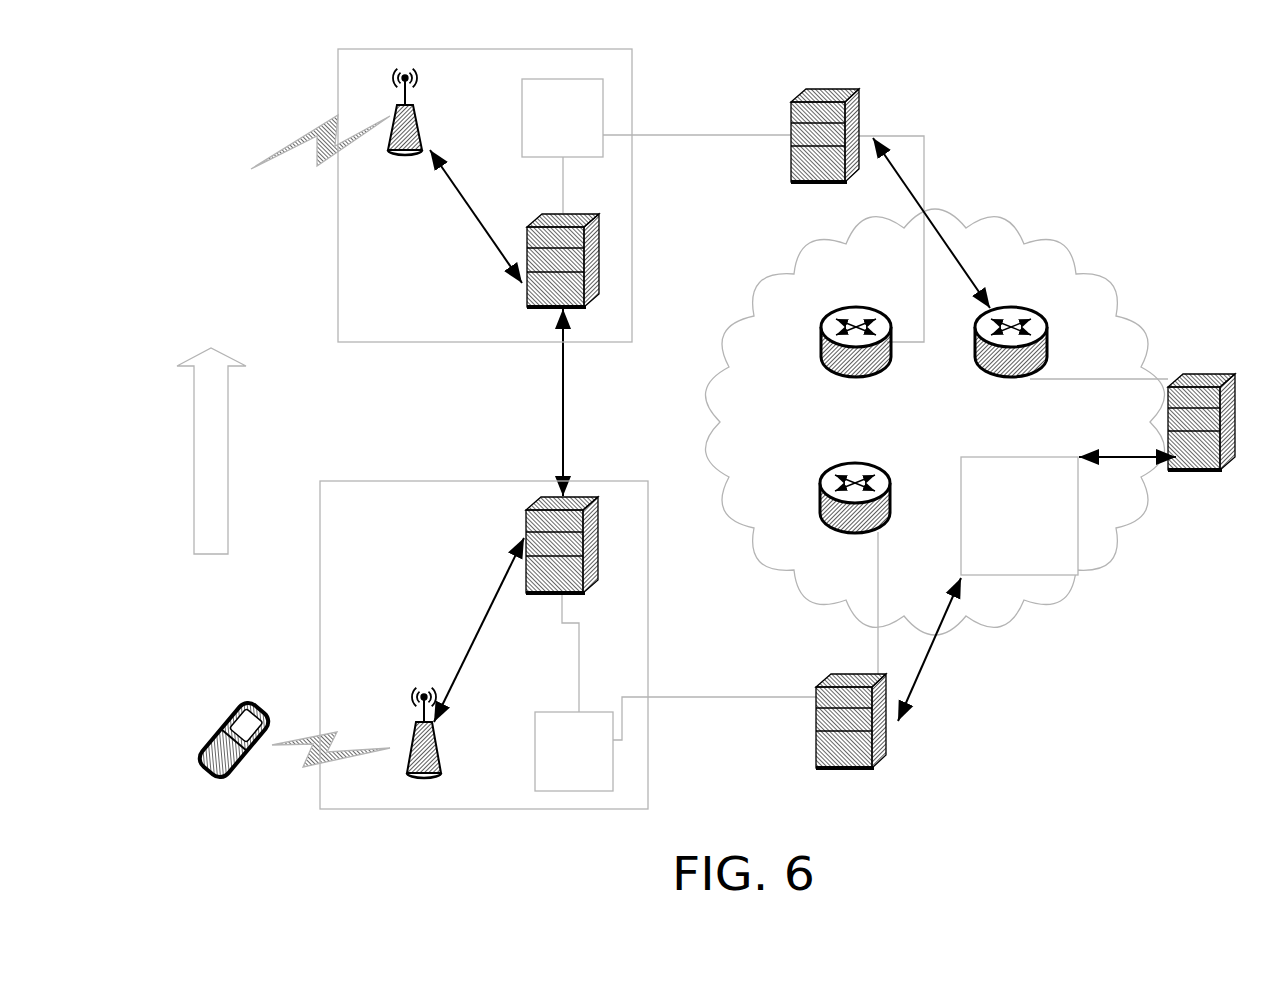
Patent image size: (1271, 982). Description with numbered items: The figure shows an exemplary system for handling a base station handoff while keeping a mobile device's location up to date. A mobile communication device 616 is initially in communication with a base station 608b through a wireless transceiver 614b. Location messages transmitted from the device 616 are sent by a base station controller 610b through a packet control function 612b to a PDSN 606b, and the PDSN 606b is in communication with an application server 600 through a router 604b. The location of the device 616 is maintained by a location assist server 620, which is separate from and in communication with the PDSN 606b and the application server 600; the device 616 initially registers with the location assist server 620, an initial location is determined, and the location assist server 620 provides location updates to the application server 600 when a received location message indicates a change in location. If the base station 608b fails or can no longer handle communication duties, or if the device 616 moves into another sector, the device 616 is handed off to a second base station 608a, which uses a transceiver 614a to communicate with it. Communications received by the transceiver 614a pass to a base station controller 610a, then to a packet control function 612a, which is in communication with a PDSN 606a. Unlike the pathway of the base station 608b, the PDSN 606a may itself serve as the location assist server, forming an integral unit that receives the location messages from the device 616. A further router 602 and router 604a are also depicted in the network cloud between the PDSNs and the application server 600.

The application server 600 is at (1201, 437).
The router 602 is at (1011, 358).
The router 604a is at (856, 358).
The router 604b is at (855, 513).
The PDSN 606a is at (825, 150).
The PDSN 606b is at (851, 736).
The base station 608a is at (632, 308).
The base station 608b is at (596, 481).
The base station controller 610a is at (600, 233).
The base station controller 610b is at (597, 515).
The packet control function 612a is at (562, 118).
The packet control function 612b is at (574, 751).
The transceiver 614a is at (404, 127).
The wireless transceiver 614b is at (423, 747).
The mobile communication device 616 is at (233, 752).
The location assist server 620 is at (1019, 516).